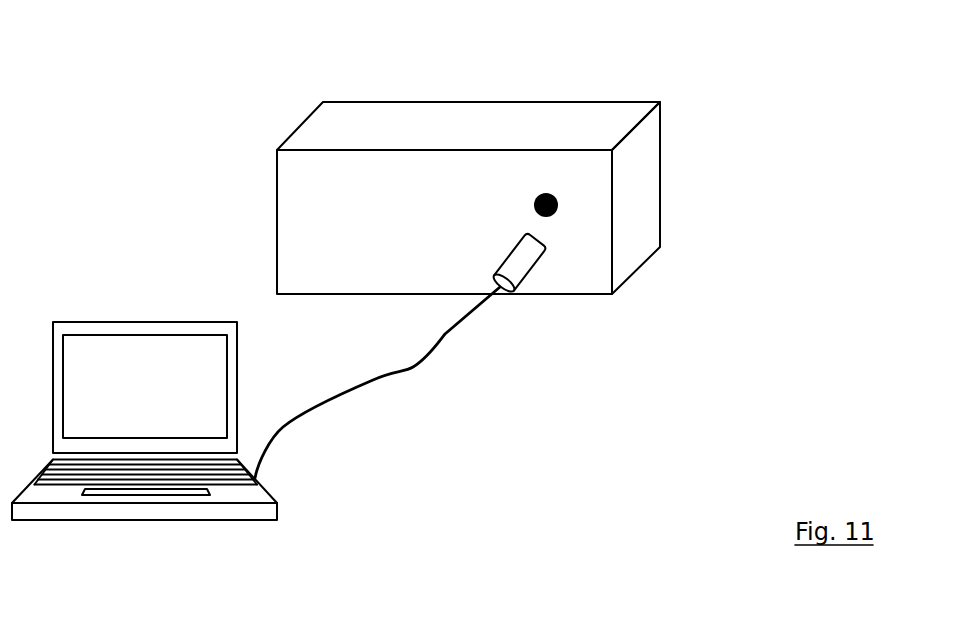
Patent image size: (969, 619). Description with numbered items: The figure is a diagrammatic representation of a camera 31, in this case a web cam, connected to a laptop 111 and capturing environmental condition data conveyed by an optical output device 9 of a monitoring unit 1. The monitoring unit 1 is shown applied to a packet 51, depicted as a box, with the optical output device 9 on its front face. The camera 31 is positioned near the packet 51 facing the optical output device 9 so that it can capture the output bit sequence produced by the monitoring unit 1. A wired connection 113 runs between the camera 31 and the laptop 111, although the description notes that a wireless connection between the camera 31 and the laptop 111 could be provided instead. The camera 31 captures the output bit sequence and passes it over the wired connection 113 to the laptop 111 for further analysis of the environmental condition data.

The monitoring unit 1 is at (459, 161).
The optical output device 9 is at (558, 203).
The camera 31 is at (525, 264).
The packet 51 is at (277, 222).
The laptop 111 is at (273, 507).
The wired connection 113 is at (415, 368).